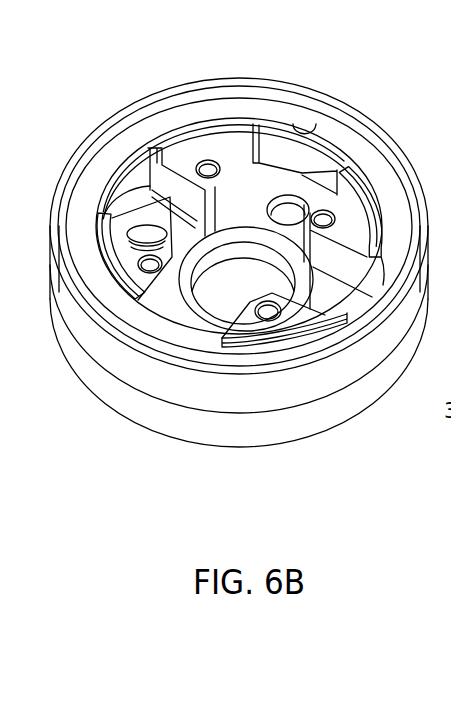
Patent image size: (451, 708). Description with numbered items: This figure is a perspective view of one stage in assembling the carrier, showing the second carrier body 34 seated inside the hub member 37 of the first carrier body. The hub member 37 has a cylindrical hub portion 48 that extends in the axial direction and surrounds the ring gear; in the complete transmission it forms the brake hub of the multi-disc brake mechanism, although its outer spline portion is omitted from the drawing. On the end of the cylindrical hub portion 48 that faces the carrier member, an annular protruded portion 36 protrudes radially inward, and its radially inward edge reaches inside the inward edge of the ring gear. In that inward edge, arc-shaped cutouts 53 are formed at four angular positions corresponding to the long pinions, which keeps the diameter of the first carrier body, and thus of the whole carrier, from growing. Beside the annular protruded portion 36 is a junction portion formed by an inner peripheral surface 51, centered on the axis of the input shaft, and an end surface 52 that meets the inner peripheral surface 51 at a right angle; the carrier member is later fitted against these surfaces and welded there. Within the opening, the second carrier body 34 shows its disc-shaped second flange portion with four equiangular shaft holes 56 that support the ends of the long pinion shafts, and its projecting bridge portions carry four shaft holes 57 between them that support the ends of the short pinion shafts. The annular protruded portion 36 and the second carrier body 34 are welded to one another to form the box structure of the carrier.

The second carrier body 34 is at (215, 122).
The annular protruded portion 36 is at (73, 226).
The hub member 37 is at (173, 84).
The cylindrical hub portion 48 is at (132, 410).
The inner peripheral surface 51 is at (104, 140).
The end surface 52 is at (86, 162).
The arc-shaped cutouts 53 is at (290, 213).
The shaft holes 56 is at (268, 141).
The shaft holes 57 is at (330, 216).